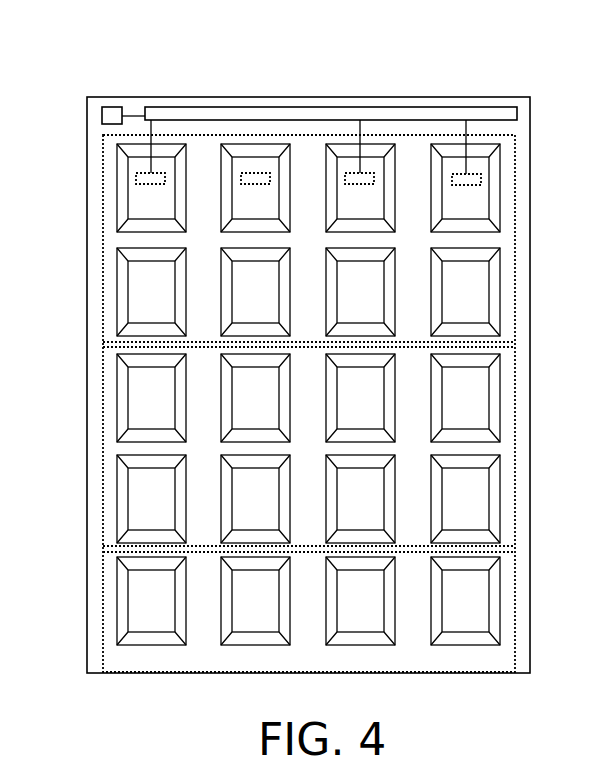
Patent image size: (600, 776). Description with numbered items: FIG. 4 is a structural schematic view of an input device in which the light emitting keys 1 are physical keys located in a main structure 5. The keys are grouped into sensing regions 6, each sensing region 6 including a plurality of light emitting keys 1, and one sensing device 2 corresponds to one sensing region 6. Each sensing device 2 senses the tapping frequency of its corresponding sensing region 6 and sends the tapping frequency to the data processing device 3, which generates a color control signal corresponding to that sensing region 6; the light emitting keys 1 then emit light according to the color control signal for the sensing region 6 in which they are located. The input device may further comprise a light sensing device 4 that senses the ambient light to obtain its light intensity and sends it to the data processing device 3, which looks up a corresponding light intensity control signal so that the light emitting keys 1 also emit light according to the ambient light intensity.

The light emitting key 1 is at (117, 200).
The sensing device 2 is at (140, 172).
The data processing device 3 is at (333, 108).
The light sensing device 4 is at (112, 104).
The main structure 5 is at (269, 102).
The sensing region 6 is at (102, 243).